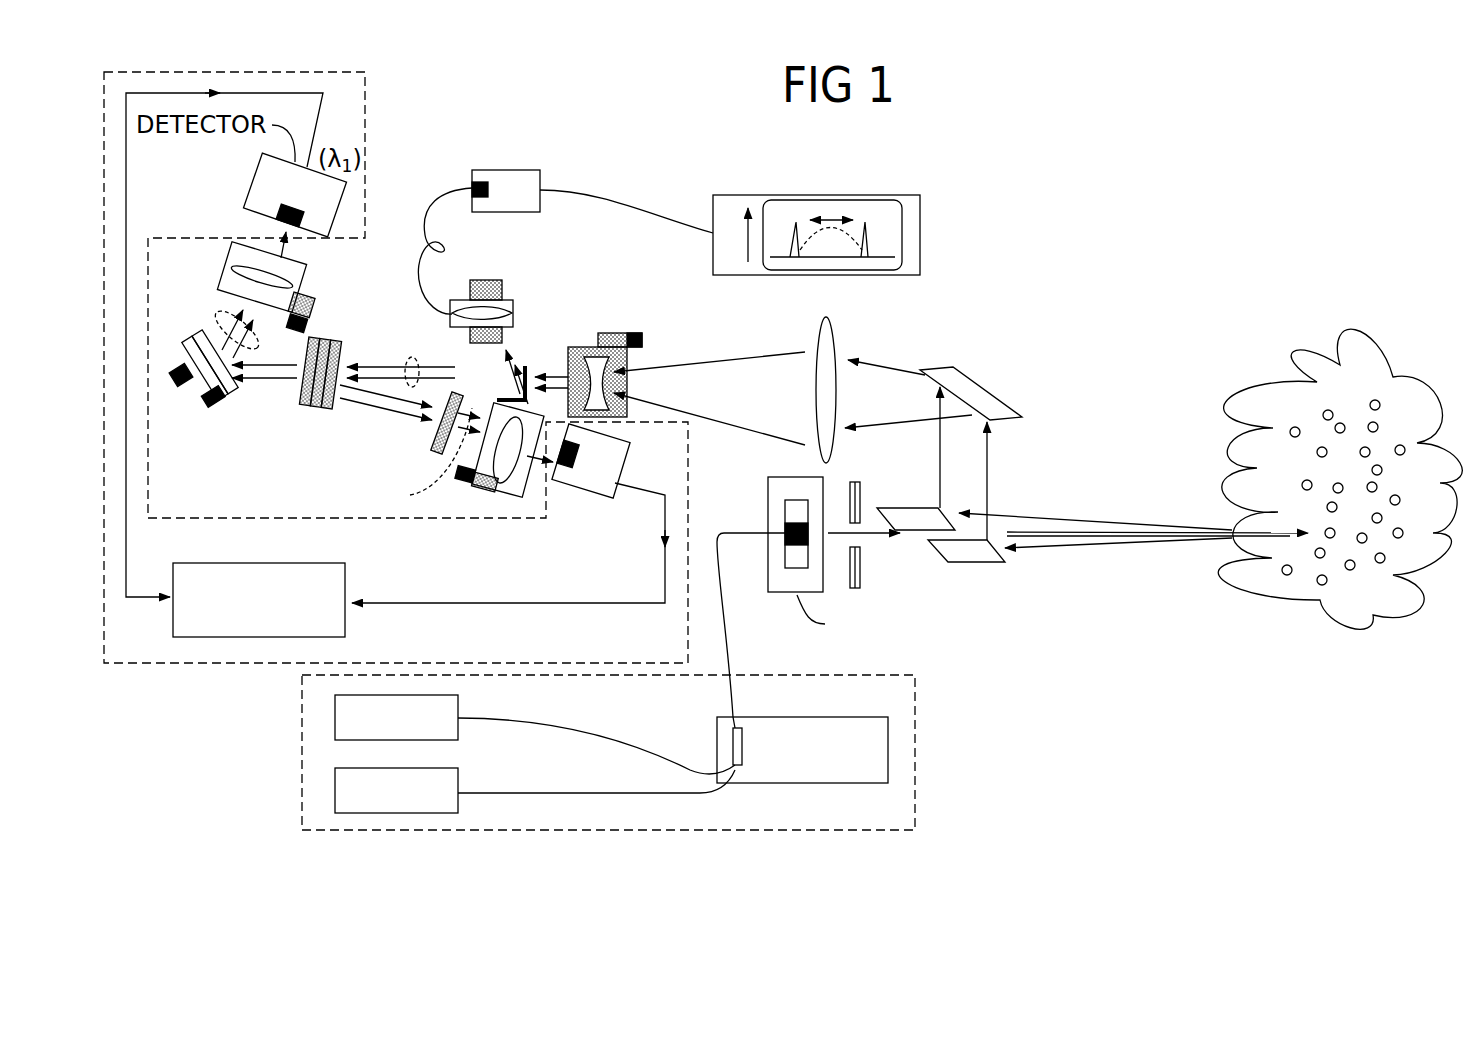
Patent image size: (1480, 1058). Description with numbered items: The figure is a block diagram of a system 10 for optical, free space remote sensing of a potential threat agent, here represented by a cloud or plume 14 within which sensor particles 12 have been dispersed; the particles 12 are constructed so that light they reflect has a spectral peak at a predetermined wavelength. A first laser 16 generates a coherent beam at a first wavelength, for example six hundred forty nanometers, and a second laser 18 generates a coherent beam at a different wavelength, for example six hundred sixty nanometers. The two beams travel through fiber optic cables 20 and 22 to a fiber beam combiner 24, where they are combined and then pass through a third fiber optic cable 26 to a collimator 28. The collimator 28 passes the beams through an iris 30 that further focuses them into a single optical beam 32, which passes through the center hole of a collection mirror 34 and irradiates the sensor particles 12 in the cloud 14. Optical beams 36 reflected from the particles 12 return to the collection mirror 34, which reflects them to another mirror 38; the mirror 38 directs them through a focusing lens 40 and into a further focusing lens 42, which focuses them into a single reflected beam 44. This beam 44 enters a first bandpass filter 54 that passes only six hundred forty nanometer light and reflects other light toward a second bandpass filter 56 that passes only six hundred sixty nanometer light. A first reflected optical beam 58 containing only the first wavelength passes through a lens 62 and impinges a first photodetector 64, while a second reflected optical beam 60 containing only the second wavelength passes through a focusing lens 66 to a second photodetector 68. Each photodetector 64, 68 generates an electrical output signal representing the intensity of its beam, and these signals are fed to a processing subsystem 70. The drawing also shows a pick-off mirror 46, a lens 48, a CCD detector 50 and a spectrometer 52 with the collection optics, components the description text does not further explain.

The system 10 is at (1058, 256).
The sensor particles 12 is at (1302, 482).
The cloud or plume 14 is at (1240, 376).
The first laser 16 is at (460, 705).
The second laser 18 is at (460, 778).
The fiber optic cable 20 is at (563, 733).
The fiber optic cable 22 is at (543, 793).
The fiber beam combiner 24 is at (745, 770).
The third fiber optic cable 26 is at (727, 621).
The collimator 28 is at (778, 502).
The iris 30 is at (860, 568).
The single optical beam 32 is at (900, 535).
The collection mirror 34 is at (988, 564).
The reflected optical beams 36 is at (1070, 518).
The mirror 38 is at (1000, 403).
The focusing lens 40 is at (838, 333).
The focusing lens 42 is at (628, 362).
The single reflected beam 44 is at (412, 357).
The pick-off mirror 46 is at (528, 368).
The lens 48 is at (488, 282).
The CCD detector 50 is at (472, 183).
The spectrometer 52 is at (920, 236).
The first bandpass filter 54 is at (311, 406).
The second bandpass filter 56 is at (440, 455).
The first reflected optical beam 58 is at (222, 318).
The second reflected optical beam 60 is at (412, 494).
The lens 62 is at (226, 268).
The first photodetector 64 is at (253, 178).
The focusing lens 66 is at (495, 490).
The second photodetector 68 is at (580, 500).
The processing subsystem 70 is at (347, 580).